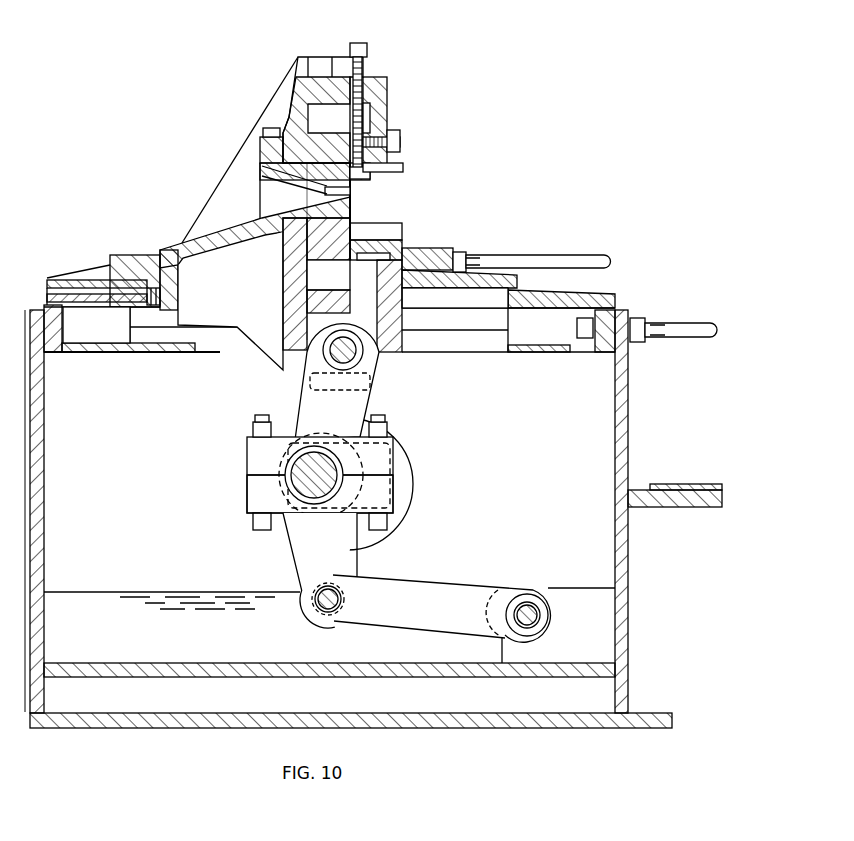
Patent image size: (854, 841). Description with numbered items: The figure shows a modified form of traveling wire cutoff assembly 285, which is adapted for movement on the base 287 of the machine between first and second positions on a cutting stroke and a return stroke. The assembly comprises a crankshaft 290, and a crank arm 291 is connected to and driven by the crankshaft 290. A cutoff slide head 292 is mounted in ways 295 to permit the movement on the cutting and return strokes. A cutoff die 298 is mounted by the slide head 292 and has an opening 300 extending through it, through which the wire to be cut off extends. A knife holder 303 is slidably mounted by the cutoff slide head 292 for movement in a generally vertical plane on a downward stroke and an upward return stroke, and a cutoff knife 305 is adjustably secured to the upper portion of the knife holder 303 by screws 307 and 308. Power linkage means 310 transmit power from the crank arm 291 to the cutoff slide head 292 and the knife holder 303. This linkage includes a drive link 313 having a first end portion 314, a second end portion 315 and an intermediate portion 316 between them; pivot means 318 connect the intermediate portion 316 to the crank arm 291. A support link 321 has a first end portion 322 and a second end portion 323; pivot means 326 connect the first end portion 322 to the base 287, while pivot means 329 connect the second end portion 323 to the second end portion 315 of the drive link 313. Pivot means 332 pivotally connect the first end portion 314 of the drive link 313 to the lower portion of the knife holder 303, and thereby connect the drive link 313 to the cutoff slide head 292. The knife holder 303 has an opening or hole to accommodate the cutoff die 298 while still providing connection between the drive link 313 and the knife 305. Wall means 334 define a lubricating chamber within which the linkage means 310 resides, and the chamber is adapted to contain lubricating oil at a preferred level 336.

The wire cutoff assembly 285 is at (128, 173).
The base 287 is at (50, 350).
The crankshaft 290 is at (340, 440).
The crank arm 291 is at (392, 455).
The cutoff slide head 292 is at (200, 228).
The ways 295 is at (130, 318).
The cutoff die 298 is at (270, 182).
The opening 300 is at (355, 192).
The knife holder 303 is at (330, 90).
The cutoff knife 305 is at (377, 178).
The screw 307 is at (360, 43).
The screw 308 is at (400, 140).
The power linkage means 310 is at (200, 465).
The drive link 313 is at (290, 540).
The first end portion 314 is at (300, 410).
The second end portion 315 is at (296, 572).
The intermediate portion 316 is at (262, 456).
The pivot means 318 is at (278, 488).
The support link 321 is at (474, 607).
The first end portion 322 is at (470, 590).
The second end portion 323 is at (373, 620).
The pivot means 326 is at (527, 604).
The pivot means 329 is at (328, 612).
The pivot means 332 is at (318, 352).
The wall means 334 is at (615, 442).
The level 336 is at (148, 590).